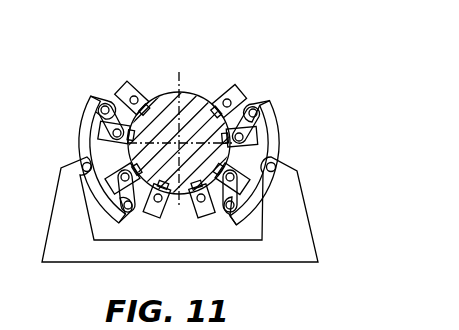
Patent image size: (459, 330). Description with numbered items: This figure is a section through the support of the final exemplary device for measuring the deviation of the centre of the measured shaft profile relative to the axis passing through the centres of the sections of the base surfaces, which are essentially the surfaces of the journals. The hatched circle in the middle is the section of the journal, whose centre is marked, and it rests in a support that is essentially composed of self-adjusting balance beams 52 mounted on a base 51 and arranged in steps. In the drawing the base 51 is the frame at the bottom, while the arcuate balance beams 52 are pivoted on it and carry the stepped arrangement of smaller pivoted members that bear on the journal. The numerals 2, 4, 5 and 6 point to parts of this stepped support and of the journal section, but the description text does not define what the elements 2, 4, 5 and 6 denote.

The workpiece 2 is at (162, 92).
The clamping jaws 4 is at (182, 212).
The pivot pin 5 is at (197, 210).
The jaw link 6 is at (207, 204).
The base 51 is at (295, 213).
The self-adjusting balance beam 52 is at (272, 136).